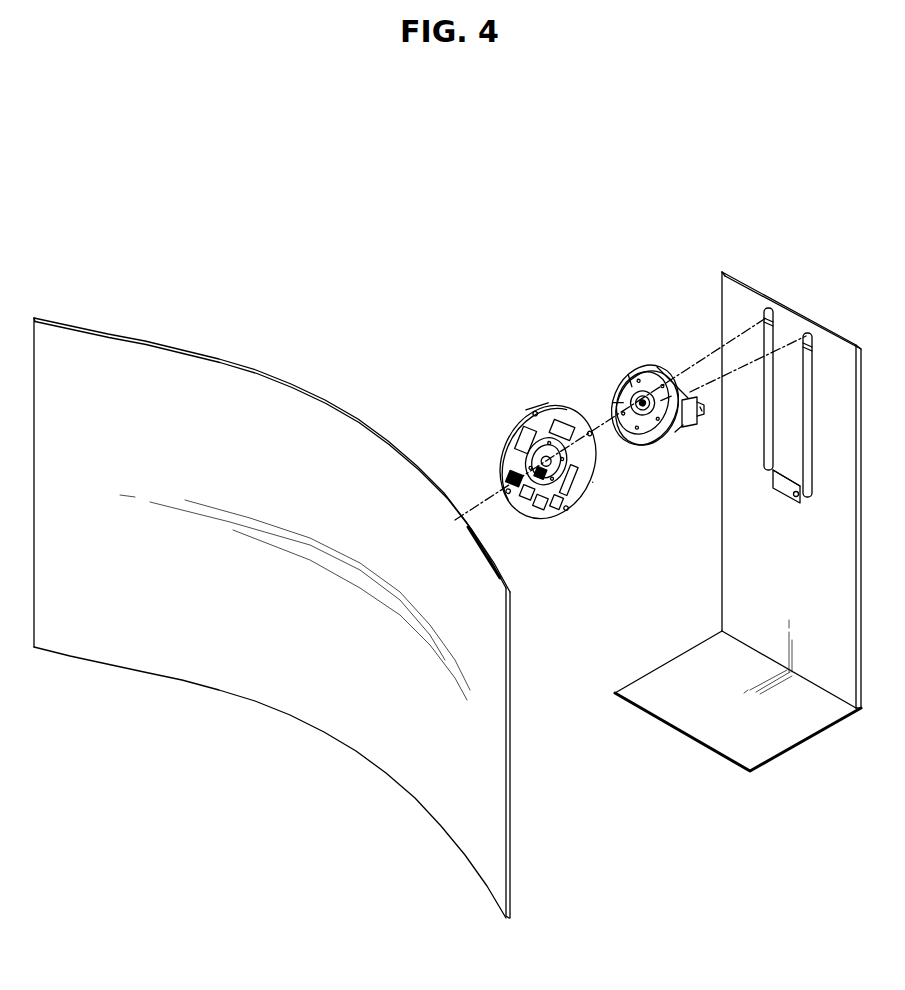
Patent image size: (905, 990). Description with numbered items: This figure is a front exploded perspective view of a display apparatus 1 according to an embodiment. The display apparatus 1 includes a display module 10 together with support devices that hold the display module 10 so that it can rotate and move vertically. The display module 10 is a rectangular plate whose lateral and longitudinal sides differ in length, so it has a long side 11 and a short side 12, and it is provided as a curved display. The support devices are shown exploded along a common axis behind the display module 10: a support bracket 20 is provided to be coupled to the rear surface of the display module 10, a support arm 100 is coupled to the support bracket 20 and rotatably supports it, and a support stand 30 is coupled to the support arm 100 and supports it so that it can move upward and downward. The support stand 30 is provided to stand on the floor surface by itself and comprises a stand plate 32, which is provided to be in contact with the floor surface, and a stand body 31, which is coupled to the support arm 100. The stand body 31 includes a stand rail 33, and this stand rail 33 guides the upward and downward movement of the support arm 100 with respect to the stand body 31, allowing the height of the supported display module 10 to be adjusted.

The display apparatus 1 is at (443, 158).
The display module 10 is at (251, 349).
The long side 11 is at (190, 352).
The short side 12 is at (511, 673).
The support bracket 20 is at (504, 388).
The support arm 100 is at (628, 357).
The support stand 30 is at (717, 267).
The stand body 31 is at (735, 556).
The stand plate 32 is at (675, 669).
The stand rail 33 is at (764, 438).